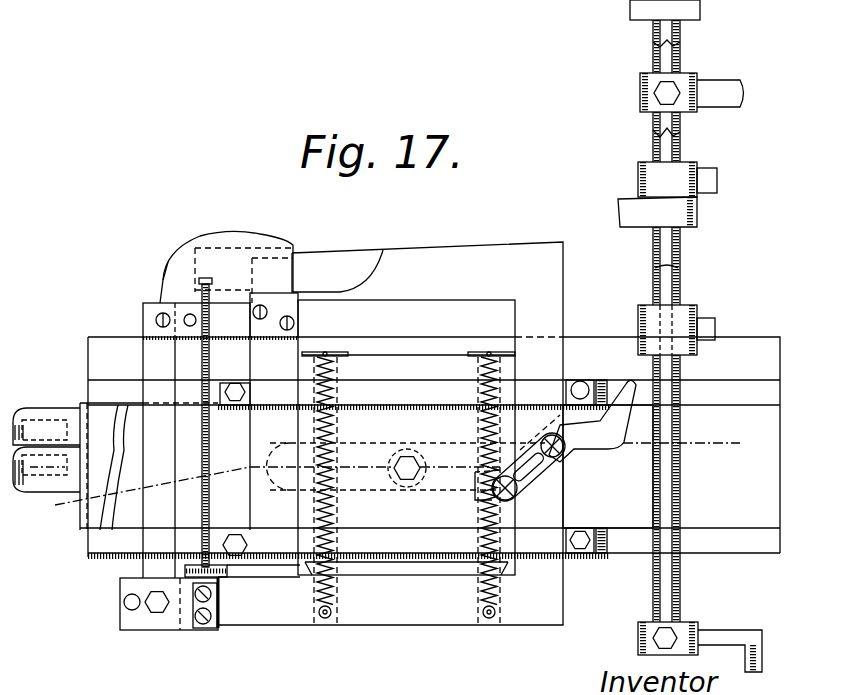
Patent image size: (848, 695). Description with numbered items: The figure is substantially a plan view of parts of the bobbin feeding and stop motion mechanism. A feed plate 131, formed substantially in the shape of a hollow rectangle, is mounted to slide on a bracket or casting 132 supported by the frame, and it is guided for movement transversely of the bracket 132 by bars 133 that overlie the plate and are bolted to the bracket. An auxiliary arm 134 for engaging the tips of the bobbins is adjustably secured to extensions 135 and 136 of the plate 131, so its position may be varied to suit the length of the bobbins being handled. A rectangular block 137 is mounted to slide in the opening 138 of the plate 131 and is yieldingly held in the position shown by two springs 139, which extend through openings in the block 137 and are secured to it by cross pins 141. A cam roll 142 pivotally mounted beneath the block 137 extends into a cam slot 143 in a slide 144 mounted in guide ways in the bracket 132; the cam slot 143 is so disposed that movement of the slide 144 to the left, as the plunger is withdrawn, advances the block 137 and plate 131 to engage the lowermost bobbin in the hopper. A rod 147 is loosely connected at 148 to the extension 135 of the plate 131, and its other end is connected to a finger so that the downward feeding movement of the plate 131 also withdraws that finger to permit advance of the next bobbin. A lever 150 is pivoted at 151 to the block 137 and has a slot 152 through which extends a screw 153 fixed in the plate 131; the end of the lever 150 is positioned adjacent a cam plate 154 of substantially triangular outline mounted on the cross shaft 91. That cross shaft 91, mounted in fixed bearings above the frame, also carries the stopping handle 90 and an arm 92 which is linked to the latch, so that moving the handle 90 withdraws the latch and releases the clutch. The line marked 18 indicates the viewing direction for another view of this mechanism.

The rod 18 is at (390, 466).
The handle 90 is at (728, 85).
The cross shaft 91 is at (683, 594).
The arm 92 is at (718, 632).
The feed plate 131 is at (565, 296).
The bracket 132 is at (95, 322).
The bars 133 is at (578, 381).
The auxiliary arm 134 is at (168, 262).
The extension 135 is at (133, 632).
The extension 136 is at (220, 315).
The rectangular block 137 is at (430, 455).
The opening 138 is at (466, 302).
The springs 139 is at (332, 591).
The cross pins 141 is at (331, 352).
The cam roll 142 is at (428, 467).
The cam slot 143 is at (601, 468).
The slide 144 is at (671, 445).
The rod 147 is at (207, 505).
The loose connection 148 is at (222, 576).
The lever 150 is at (516, 486).
The pivot 151 is at (506, 501).
The slot 152 is at (533, 416).
The screw 153 is at (580, 440).
The cam plate 154 is at (640, 372).